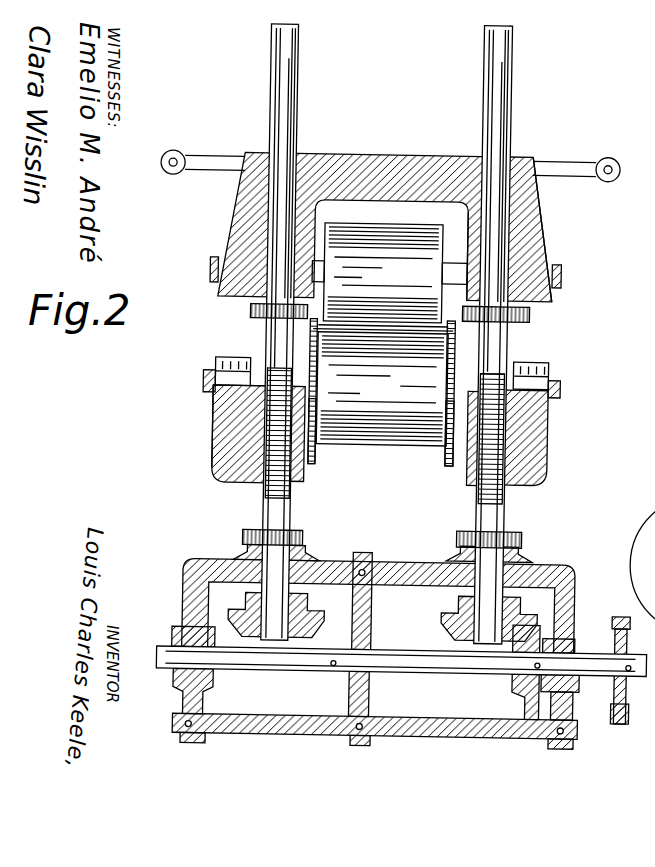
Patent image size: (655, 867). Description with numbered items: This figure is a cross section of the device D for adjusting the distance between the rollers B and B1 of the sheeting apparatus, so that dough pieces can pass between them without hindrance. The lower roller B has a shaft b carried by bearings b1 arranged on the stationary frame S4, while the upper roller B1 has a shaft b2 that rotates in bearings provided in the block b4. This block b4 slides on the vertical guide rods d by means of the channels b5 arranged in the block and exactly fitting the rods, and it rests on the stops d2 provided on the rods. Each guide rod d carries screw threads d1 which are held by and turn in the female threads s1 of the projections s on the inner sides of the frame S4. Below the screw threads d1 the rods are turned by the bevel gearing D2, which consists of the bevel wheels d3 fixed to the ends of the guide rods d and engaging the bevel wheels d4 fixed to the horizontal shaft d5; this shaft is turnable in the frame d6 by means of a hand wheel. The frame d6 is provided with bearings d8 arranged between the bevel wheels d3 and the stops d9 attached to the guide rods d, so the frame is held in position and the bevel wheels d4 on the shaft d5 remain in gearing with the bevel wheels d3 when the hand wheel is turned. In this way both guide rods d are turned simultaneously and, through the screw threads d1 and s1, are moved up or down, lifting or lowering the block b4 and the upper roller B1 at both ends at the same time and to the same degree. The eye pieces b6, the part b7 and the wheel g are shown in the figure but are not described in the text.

The channels b5 is at (268, 170).
The block b4 is at (535, 222).
The eye ring b6 is at (186, 158).
The shaft b2 is at (208, 270).
The roller B1 is at (389, 273).
The roller B is at (382, 389).
The block flange b7 is at (312, 329).
The projections s is at (462, 477).
The female threads s1 is at (477, 493).
The frame S4 is at (213, 440).
The bearings b1 is at (222, 363).
The shaft b is at (203, 387).
The device D is at (198, 416).
The frame d6 is at (188, 582).
The bevel wheels d3 is at (462, 610).
The bevel wheels d4 is at (517, 690).
The bevel gearing D2 is at (628, 690).
The wheel g is at (642, 565).
The shaft d5 is at (161, 650).
The bearings d8 is at (452, 558).
The guide rods d is at (510, 108).
The screw threads d1 is at (267, 488).
The stops d2 is at (249, 312).
The stops d9 is at (455, 536).